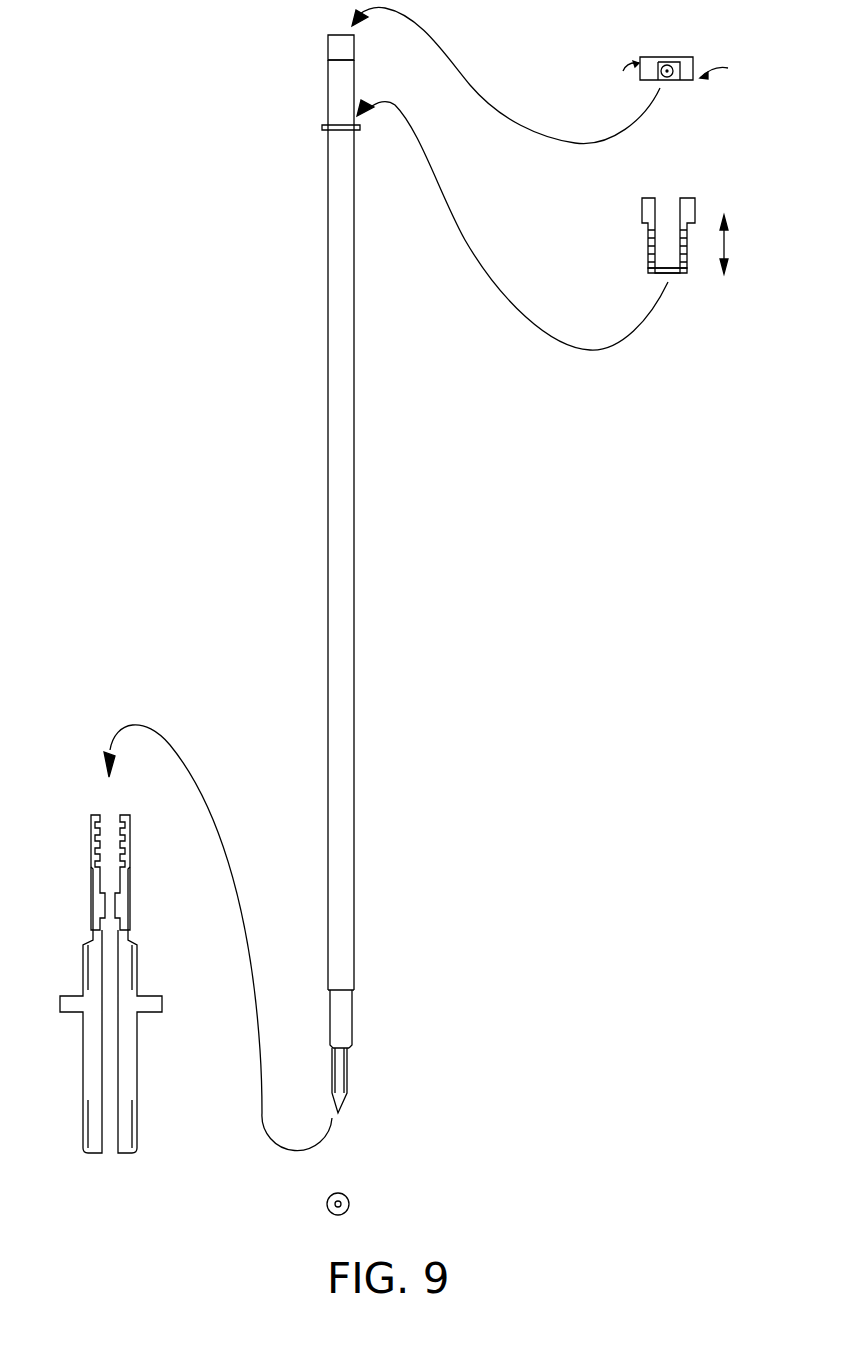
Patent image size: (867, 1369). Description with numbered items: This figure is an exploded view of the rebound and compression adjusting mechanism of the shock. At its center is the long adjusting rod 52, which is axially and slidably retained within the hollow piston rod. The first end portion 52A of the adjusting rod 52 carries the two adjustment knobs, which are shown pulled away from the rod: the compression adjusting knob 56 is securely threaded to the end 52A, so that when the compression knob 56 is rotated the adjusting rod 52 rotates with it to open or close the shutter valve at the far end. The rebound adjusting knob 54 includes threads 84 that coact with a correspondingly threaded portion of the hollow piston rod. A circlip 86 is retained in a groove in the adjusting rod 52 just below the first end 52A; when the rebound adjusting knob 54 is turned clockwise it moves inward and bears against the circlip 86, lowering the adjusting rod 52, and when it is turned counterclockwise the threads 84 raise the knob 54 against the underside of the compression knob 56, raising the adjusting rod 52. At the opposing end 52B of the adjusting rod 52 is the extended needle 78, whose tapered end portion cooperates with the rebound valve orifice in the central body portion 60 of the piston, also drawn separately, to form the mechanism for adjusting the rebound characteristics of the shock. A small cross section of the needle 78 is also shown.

The adjusting rod 52 is at (328, 533).
The first end portion of the adjusting rod 52A is at (328, 52).
The opposing end of the adjusting rod 52B is at (354, 980).
The circlip 86 is at (322, 127).
The compression adjusting knob 56 is at (690, 57).
The rebound adjusting knob 54 is at (695, 202).
The threads 84 is at (688, 268).
The central body portion (piston hub) 60 is at (73, 994).
The extended needle 78 is at (347, 1082).